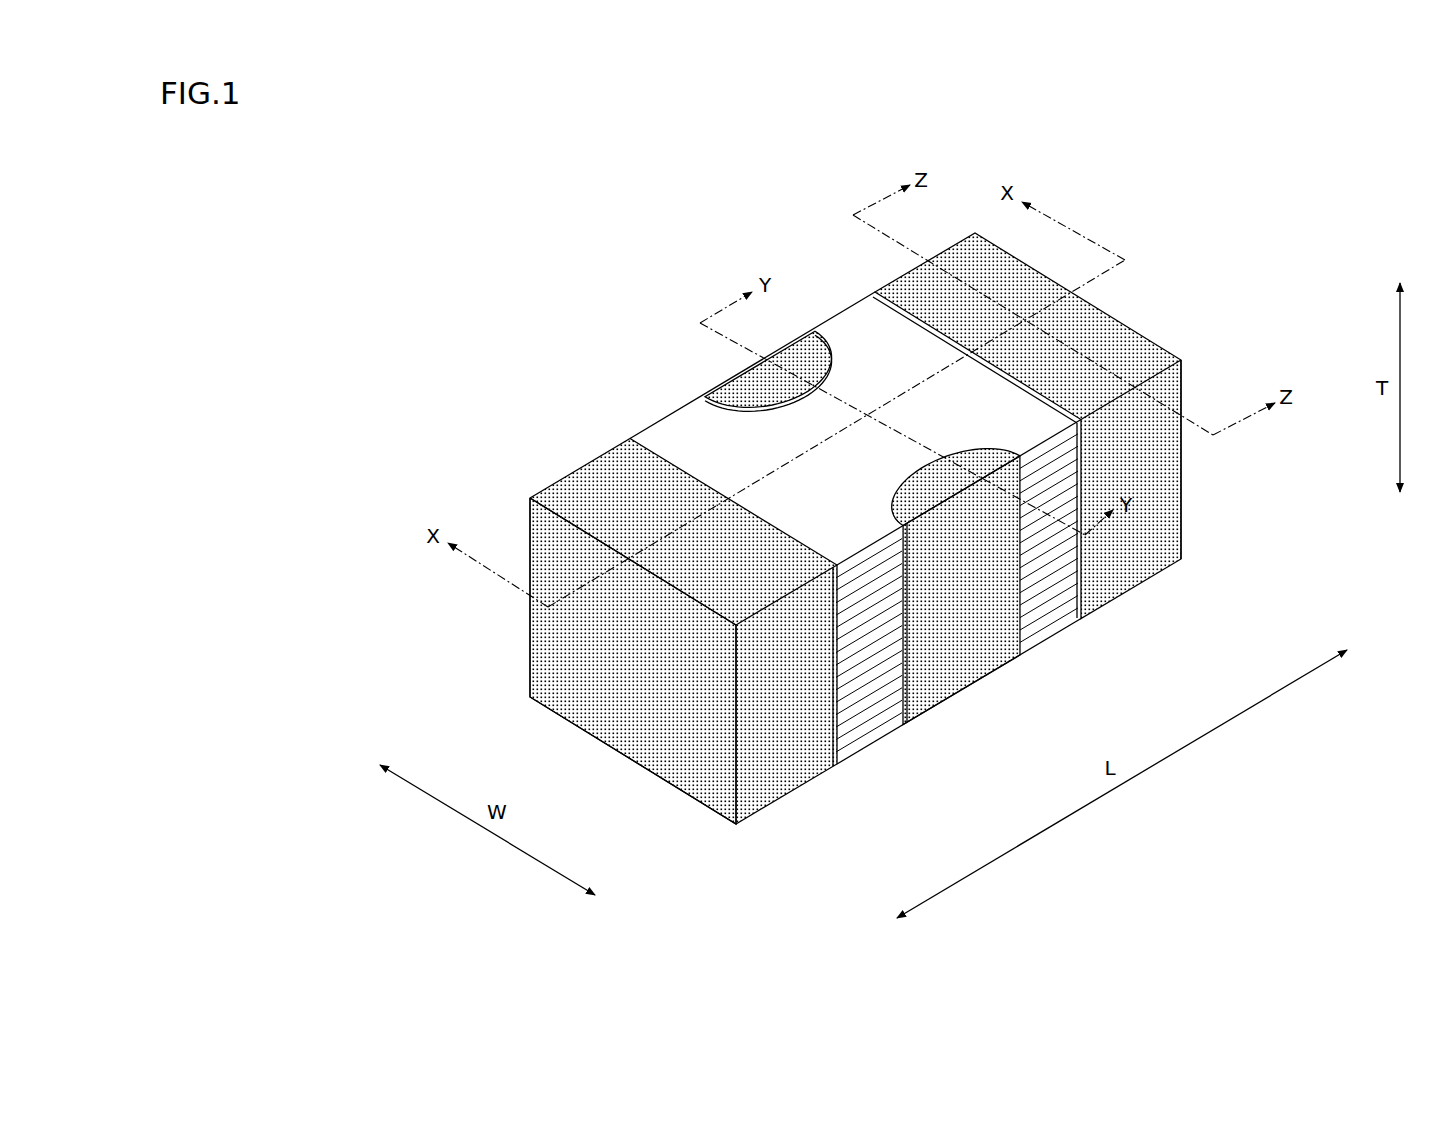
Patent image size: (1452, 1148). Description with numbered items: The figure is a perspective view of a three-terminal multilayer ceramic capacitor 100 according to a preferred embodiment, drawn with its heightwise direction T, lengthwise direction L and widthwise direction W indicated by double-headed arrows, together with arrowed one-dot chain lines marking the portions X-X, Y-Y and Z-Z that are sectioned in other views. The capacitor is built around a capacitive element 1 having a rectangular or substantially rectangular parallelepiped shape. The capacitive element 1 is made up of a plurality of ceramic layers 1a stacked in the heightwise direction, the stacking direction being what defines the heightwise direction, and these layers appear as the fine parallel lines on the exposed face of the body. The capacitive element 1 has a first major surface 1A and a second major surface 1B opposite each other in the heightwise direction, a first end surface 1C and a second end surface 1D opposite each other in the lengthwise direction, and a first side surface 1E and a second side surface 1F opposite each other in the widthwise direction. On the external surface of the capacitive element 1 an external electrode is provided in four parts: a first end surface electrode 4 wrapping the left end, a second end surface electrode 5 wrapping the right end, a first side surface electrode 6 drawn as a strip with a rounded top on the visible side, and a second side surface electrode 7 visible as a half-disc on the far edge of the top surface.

The three-terminal multilayer ceramic capacitor 100 is at (280, 188).
The capacitive element 1 is at (868, 357).
The ceramic layers 1a is at (1060, 583).
The first major surface 1A is at (888, 750).
The second major surface 1B is at (683, 443).
The first end surface 1C is at (617, 639).
The second end surface 1D is at (1152, 303).
The first side surface 1E is at (977, 603).
The second side surface 1F is at (675, 367).
The first end surface electrode 4 is at (632, 663).
The second end surface electrode 5 is at (983, 270).
The first side surface electrode 6 is at (1028, 600).
The second side surface electrode 7 is at (735, 395).